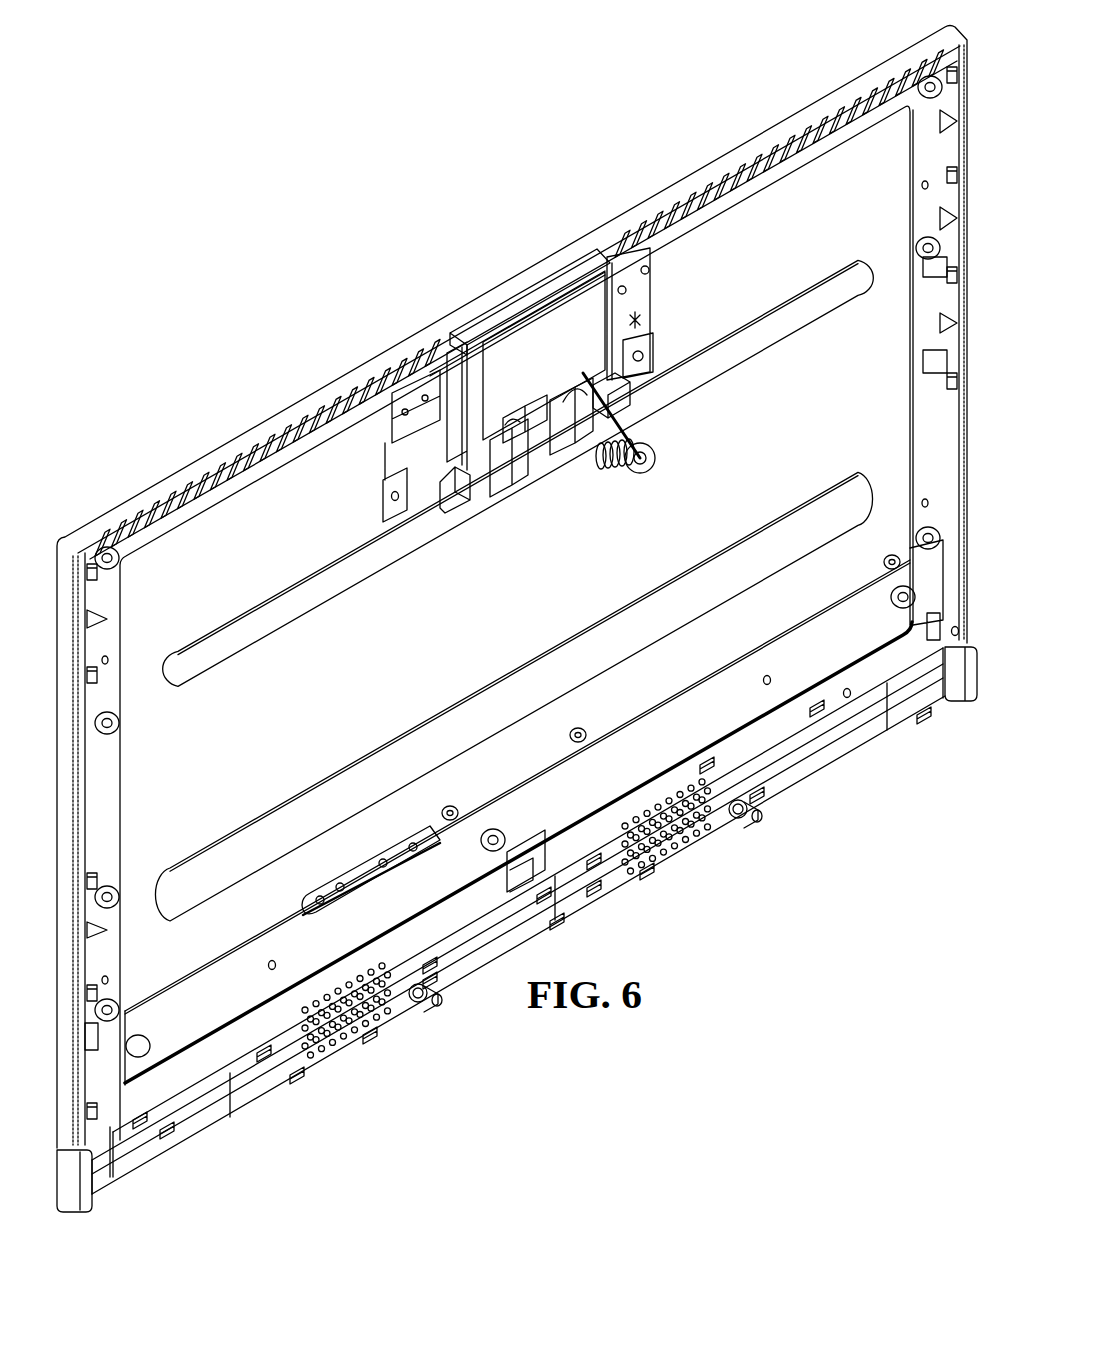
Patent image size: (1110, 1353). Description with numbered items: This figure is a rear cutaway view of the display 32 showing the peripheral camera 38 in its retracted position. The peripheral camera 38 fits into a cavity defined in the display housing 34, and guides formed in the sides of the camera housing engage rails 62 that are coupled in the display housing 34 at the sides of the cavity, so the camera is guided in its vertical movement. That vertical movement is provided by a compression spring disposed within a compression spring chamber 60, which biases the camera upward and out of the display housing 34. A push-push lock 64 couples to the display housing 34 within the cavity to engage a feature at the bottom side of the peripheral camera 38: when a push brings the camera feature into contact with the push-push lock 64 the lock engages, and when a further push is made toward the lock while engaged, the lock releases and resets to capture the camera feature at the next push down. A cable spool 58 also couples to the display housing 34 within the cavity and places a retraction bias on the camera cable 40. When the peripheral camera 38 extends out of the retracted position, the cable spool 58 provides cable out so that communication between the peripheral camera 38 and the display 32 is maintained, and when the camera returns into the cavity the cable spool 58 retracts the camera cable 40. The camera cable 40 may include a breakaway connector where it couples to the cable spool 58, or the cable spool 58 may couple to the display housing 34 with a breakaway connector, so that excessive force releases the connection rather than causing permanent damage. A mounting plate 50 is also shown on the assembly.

The display 32 is at (336, 222).
The display housing 34 is at (247, 432).
The peripheral camera 38 is at (500, 315).
The camera cable 40 is at (630, 398).
The mounting plate 50 is at (563, 313).
The cable spool 58 is at (656, 462).
The compression spring chamber 60 is at (493, 492).
The rails 62 is at (453, 433).
The push-push lock 64 is at (537, 440).